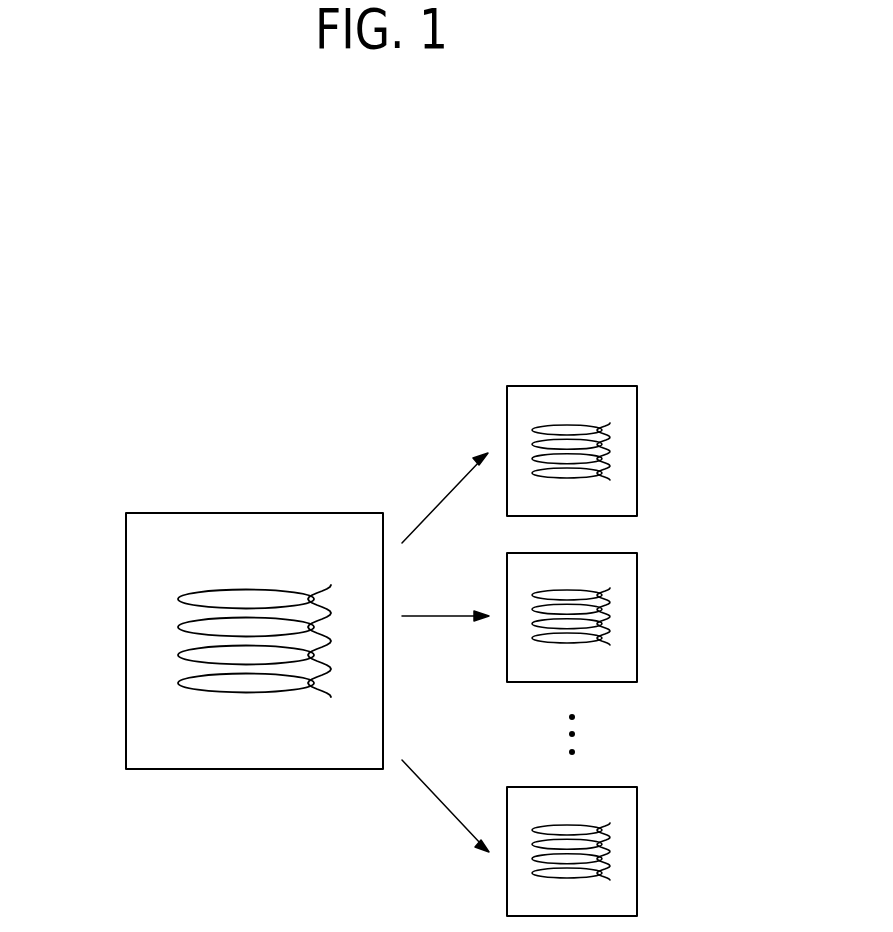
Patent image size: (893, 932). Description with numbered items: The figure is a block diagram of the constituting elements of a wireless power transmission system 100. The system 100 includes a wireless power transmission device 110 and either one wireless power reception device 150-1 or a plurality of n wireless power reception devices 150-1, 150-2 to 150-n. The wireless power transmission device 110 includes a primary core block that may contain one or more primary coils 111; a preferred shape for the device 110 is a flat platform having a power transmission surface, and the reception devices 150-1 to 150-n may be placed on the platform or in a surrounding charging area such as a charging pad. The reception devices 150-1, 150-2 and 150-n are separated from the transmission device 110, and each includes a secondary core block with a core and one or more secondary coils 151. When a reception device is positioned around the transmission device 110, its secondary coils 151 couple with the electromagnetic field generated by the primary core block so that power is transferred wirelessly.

The wireless power transmission system 100 is at (147, 388).
The wireless power transmission device 110 is at (252, 513).
The primary coil 111 is at (255, 693).
The wireless power reception device 150-1 is at (637, 451).
The wireless power reception device 150-2 is at (637, 615).
The wireless power reception device 150-n is at (637, 852).
The secondary coil 151 is at (572, 425).